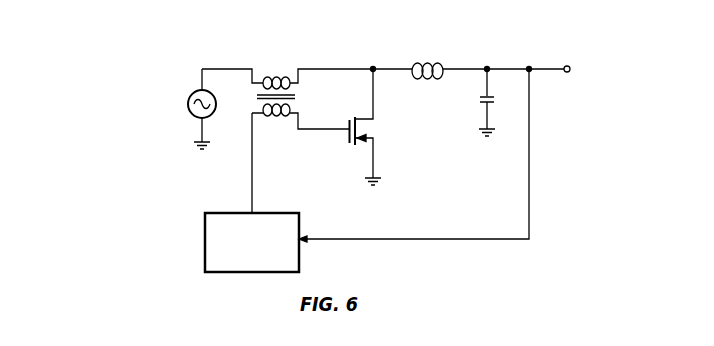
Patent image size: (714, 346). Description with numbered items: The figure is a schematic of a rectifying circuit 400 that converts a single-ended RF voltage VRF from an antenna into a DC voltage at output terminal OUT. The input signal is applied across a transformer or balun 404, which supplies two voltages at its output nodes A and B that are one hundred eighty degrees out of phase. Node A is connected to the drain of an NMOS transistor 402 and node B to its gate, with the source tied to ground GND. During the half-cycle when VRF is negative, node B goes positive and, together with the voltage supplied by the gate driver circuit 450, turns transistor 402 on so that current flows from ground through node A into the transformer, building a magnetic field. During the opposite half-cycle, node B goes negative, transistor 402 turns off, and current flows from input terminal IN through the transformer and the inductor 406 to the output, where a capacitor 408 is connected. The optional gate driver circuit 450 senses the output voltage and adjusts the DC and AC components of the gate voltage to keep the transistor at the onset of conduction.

The rectifying circuit 400 is at (112, 65).
The NMOS transistor 402 is at (361, 131).
The transformer (balun) 404 is at (283, 79).
The inductor 406 is at (440, 62).
The capacitor 408 is at (478, 101).
The gate driver circuit 450 is at (232, 213).